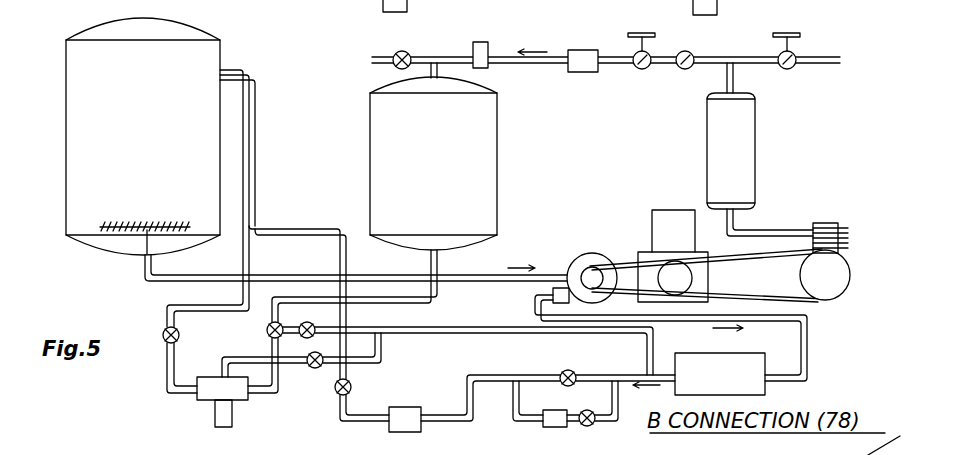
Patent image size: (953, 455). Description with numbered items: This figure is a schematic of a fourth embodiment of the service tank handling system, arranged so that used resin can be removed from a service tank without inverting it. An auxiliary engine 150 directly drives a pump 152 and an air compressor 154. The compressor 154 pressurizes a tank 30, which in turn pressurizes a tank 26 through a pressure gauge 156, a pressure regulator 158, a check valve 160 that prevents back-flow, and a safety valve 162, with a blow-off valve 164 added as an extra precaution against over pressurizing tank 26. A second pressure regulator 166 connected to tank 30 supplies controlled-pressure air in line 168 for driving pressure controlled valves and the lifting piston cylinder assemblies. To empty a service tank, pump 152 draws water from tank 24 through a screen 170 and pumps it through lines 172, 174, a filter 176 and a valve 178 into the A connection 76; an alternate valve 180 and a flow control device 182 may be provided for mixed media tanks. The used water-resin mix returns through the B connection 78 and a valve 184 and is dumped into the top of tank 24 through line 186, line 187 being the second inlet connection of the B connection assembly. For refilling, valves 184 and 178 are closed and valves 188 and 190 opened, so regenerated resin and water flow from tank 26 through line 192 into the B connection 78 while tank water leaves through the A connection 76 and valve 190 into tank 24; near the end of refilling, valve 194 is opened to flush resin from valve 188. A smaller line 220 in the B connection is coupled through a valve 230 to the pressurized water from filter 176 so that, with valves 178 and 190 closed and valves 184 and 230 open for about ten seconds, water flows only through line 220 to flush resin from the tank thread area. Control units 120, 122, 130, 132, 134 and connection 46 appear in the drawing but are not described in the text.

The tank 24 is at (66, 197).
The tank 26 is at (370, 138).
The tank 30 is at (757, 172).
The connection 46 is at (168, 451).
The A connection 76 is at (411, 407).
The B connection 78 is at (210, 377).
The control unit 120 is at (850, 8).
The control unit 122 is at (434, 8).
The control unit 130 is at (642, 8).
The control unit 132 is at (286, 1).
The control unit 134 is at (170, 6).
The auxiliary engine 150 is at (665, 210).
The pump 152 is at (590, 258).
The air compressor 154 is at (845, 272).
The pressure gauge 156 is at (684, 70).
The pressure regulator 158 is at (640, 70).
The check valve 160 is at (580, 70).
The safety valve 162 is at (490, 46).
The blow-off valve 164 is at (410, 50).
The second pressure regulator 166 is at (792, 70).
The line 168 is at (840, 60).
The screen 170 is at (148, 222).
The line 172 is at (378, 266).
The line 174 is at (808, 350).
The filter 176 is at (720, 374).
The valve 178 is at (565, 370).
The alternate valve 180 is at (592, 426).
The flow control device 182 is at (545, 427).
The valve 184 is at (162, 345).
The line 186 is at (256, 163).
The inlet connection 187 is at (268, 388).
The valve 188 is at (266, 330).
The valve 190 is at (340, 405).
The line 192 is at (425, 305).
The valve 194 is at (308, 322).
The line 220 is at (258, 365).
The valve 230 is at (316, 370).